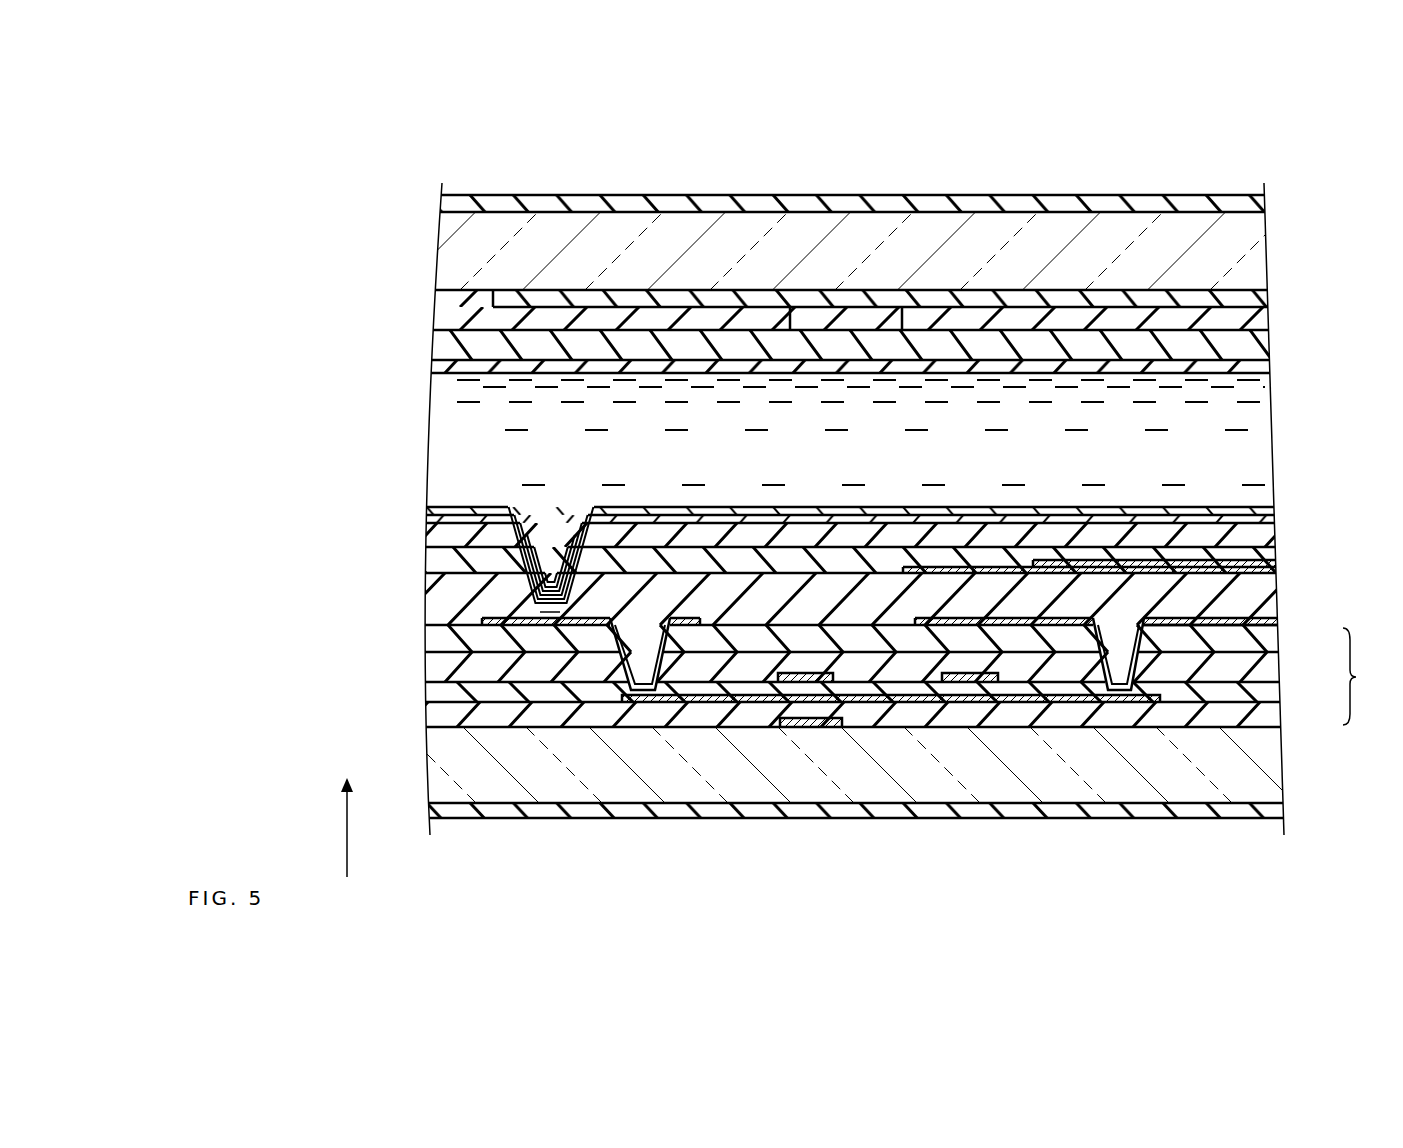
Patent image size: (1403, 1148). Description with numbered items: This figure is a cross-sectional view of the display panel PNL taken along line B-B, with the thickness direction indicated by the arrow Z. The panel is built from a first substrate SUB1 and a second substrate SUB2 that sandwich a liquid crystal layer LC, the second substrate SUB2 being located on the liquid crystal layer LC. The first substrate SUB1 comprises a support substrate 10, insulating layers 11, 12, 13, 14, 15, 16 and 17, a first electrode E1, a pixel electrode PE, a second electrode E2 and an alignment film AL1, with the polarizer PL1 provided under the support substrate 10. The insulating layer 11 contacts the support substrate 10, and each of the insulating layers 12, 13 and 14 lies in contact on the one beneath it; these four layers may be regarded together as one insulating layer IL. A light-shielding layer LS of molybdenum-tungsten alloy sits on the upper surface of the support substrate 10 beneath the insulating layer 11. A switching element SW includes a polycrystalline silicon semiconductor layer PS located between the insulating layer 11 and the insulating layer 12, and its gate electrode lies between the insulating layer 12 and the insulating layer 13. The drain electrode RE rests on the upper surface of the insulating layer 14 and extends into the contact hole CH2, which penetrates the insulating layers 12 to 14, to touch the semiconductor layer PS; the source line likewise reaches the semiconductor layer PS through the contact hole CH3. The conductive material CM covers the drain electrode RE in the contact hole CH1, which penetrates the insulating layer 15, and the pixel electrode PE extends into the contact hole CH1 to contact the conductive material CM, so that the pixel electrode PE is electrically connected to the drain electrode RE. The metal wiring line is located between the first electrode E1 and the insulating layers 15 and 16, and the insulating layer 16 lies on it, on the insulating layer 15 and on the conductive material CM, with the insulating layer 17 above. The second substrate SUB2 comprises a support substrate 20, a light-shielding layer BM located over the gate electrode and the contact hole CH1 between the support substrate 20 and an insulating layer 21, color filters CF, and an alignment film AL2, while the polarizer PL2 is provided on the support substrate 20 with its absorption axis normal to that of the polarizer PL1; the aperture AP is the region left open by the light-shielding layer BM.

The display panel PNL is at (1177, 158).
The second substrate SUB2 is at (840, 240).
The first substrate SUB1 is at (832, 740).
The polarizer PL2 is at (1268, 193).
The polarizer PL1 is at (1282, 805).
The support substrate 20 is at (1272, 248).
The support substrate 10 is at (1280, 768).
The light-shielding layer BM is at (650, 295).
The color filters CF is at (845, 328).
The insulating layer 21 is at (1272, 343).
The alignment film AL2 is at (1273, 367).
The alignment film AL1 is at (1272, 509).
The liquid crystal layer LC is at (455, 447).
The aperture AP is at (440, 507).
The contact hole CH1 is at (551, 534).
The contact hole CH2 is at (646, 658).
The contact hole CH3 is at (1118, 660).
The pixel electrode PE is at (610, 514).
The second electrode E2 is at (746, 515).
The first electrode E1 is at (1210, 560).
The insulating layer 17 is at (1272, 535).
The insulating layer 16 is at (1273, 560).
The insulating layer 15 is at (1274, 594).
The insulating layer 14 is at (1275, 637).
The insulating layer 13 is at (1276, 665).
The insulating layer 12 is at (1277, 690).
The insulating layer 11 is at (1278, 714).
The insulating layer IL is at (1360, 676).
The conductive material CM is at (535, 612).
The drain electrode RE is at (536, 627).
The switching element SW is at (681, 716).
The light-shielding layer LS is at (806, 727).
The semiconductor layer PS is at (890, 703).
The line B- B is at (854, 836).
The Z direction Z is at (347, 813).